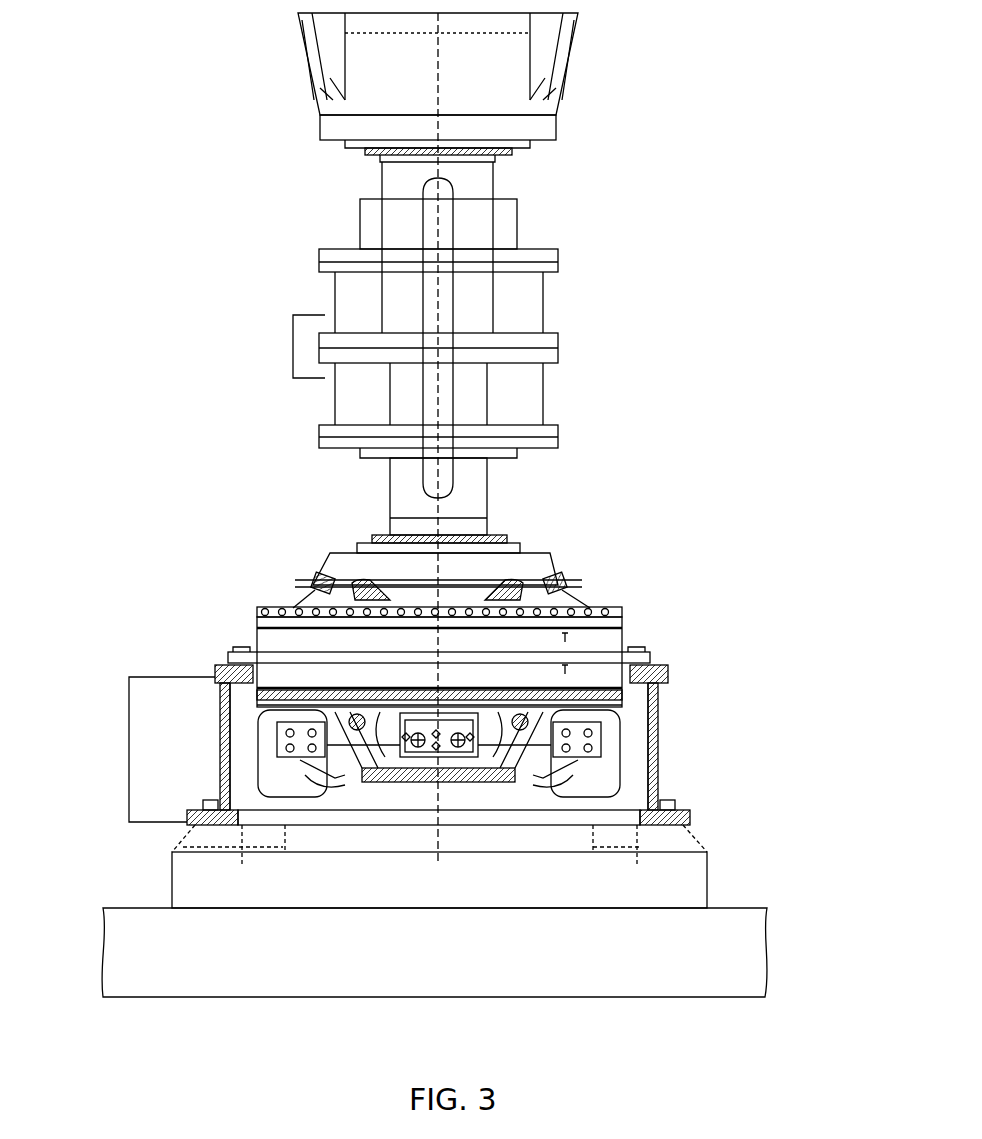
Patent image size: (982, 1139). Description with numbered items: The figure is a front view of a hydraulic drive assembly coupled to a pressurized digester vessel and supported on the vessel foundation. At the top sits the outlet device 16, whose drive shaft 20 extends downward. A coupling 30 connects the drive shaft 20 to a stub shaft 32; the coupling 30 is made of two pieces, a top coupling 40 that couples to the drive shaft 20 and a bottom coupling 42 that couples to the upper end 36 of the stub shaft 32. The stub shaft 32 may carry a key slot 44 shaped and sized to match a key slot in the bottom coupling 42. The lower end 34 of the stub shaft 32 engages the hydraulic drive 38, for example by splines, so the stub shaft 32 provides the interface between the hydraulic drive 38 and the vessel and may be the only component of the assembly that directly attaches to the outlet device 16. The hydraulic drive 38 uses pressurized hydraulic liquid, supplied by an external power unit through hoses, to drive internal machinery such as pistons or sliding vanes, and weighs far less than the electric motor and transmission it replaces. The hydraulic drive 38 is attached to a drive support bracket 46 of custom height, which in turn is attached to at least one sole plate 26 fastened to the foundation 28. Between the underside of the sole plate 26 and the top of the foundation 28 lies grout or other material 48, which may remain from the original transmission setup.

The outlet device 16 is at (562, 93).
The drive shaft 20 is at (473, 300).
The sole plate 26 is at (208, 837).
The foundation 28 is at (685, 963).
The coupling 30 is at (293, 348).
The stub shaft 32 is at (470, 477).
The lower end 34 is at (470, 526).
The upper end 36 is at (470, 397).
The hydraulic drive 38 is at (627, 620).
The top coupling 40 is at (350, 303).
The bottom coupling 42 is at (348, 398).
The key slot 44 is at (450, 216).
The drive support bracket 46 is at (129, 746).
The grout material 48 is at (677, 878).